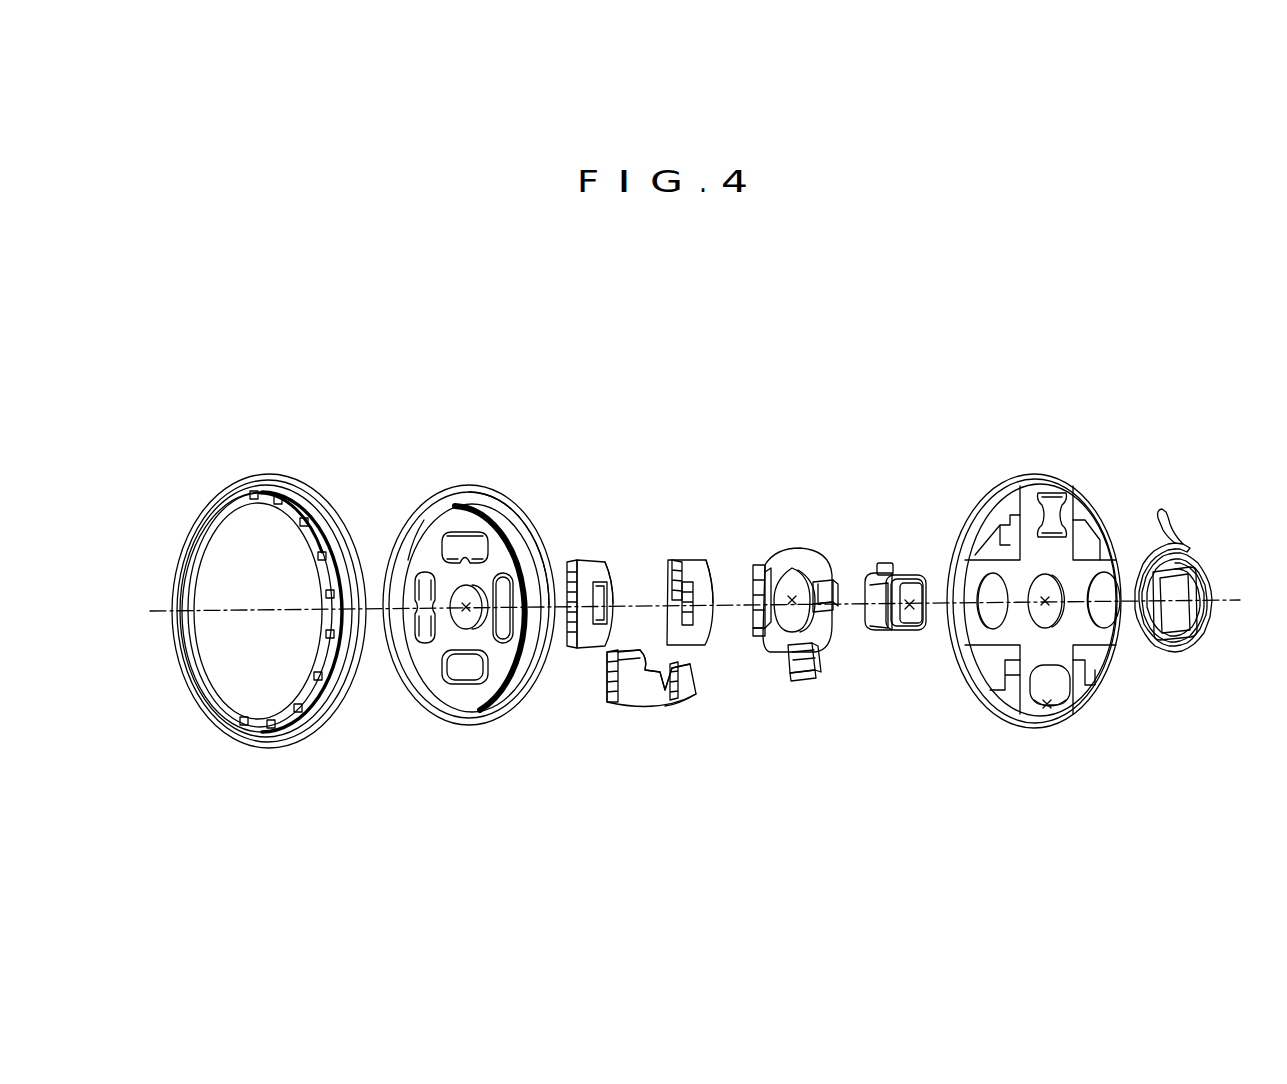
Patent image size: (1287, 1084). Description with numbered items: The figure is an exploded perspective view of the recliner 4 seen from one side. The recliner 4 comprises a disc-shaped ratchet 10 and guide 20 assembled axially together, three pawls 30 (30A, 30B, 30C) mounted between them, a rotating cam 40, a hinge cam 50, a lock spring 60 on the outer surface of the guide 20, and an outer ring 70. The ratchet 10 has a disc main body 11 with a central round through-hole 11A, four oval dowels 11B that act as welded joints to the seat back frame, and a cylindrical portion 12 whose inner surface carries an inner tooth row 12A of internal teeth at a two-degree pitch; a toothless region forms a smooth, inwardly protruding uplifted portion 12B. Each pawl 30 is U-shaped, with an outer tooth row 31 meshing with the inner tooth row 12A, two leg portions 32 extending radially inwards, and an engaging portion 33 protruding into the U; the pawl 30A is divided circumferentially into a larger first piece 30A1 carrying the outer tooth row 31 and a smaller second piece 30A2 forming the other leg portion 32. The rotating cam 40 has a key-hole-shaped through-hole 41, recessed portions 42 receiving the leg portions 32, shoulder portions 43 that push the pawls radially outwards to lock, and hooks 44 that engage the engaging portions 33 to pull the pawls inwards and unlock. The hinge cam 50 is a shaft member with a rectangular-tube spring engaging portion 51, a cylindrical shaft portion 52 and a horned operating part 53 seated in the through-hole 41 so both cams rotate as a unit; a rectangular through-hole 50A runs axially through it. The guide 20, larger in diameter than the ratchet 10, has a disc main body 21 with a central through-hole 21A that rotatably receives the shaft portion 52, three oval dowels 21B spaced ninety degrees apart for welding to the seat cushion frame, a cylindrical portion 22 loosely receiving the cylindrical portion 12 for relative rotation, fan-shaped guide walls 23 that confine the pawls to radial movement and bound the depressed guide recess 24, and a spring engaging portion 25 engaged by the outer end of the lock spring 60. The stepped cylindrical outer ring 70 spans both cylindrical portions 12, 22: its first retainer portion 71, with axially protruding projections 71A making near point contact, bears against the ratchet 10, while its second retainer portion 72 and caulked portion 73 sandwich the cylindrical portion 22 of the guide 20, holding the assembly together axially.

The recliner 4 is at (337, 300).
The outer ring 70 is at (213, 494).
The first retainer portion 71 is at (276, 506).
The projections 71A is at (316, 692).
The second retainer portion 72 is at (326, 692).
The caulked portion 73 is at (336, 500).
The ratchet 10 is at (423, 496).
The disc main body 11 is at (499, 545).
The through-hole 11A is at (473, 612).
The dowels 11B is at (461, 532).
The cylindrical portion 12 is at (442, 706).
The inner tooth row 12A is at (440, 690).
The uplifted portion 12B is at (426, 562).
The pawls 30 is at (631, 627).
The pawl 30A is at (641, 720).
The pawl 30B is at (597, 548).
The pawl 30C is at (692, 544).
The first piece 30A1 is at (622, 700).
The second piece 30A2 is at (700, 692).
The outer tooth row 31 is at (576, 572).
The leg portions 32 is at (608, 588).
The engaging portion 33 is at (600, 640).
The rotating cam 40 is at (776, 546).
The through-hole 41 is at (797, 576).
The recessed portions 42 is at (826, 582).
The shoulder portions 43 is at (757, 575).
The hooks 44 is at (836, 590).
The hinge cam 50 is at (896, 650).
The through-hole 50A is at (913, 625).
The spring engaging portion 51 is at (912, 576).
The shaft portion 52 is at (878, 584).
The operating part 53 is at (900, 566).
The guide 20 is at (968, 496).
The disc main body 21 is at (1093, 516).
The through-hole 21A is at (1043, 596).
The dowels 21B is at (1107, 612).
The cylindrical portion 22 is at (964, 530).
The guide walls 23 is at (1015, 495).
The guide recess 24 is at (1047, 680).
The spring engaging portion 25 is at (1053, 490).
The lock spring 60 is at (1198, 534).